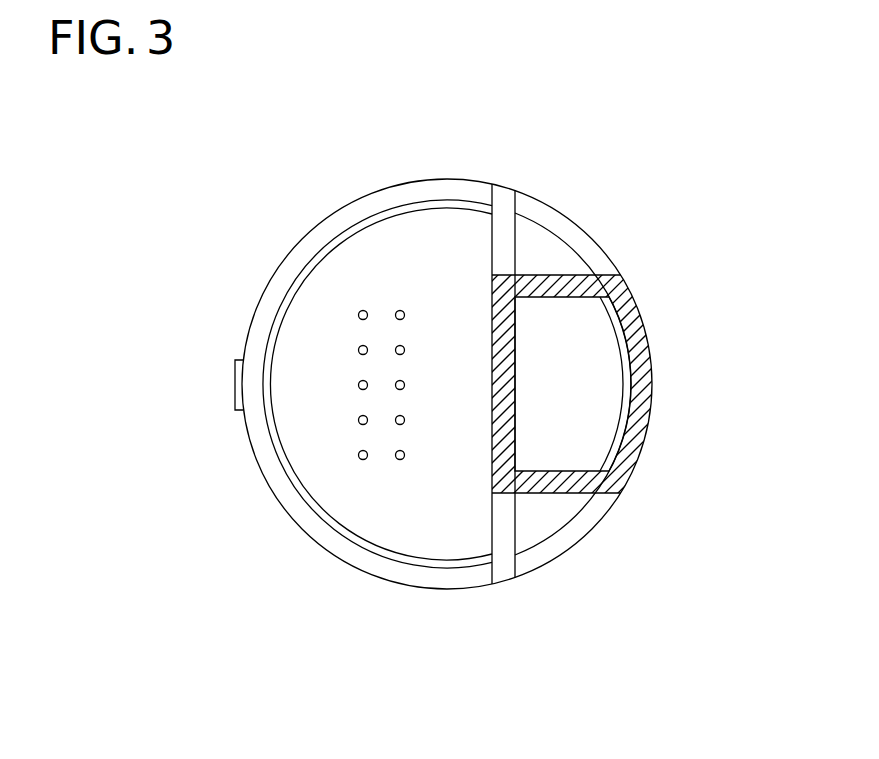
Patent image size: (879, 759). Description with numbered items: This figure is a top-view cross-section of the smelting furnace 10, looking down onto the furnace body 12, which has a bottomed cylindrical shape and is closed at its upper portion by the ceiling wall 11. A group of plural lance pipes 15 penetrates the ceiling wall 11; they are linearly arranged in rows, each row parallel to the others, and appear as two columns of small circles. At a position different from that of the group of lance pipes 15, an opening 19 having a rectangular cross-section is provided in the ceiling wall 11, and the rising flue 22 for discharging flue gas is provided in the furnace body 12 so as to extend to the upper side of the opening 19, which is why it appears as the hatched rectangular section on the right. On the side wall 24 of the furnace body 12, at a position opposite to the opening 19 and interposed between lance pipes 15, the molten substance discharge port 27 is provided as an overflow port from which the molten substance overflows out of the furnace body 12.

The smelting furnace 10 is at (652, 172).
The ceiling wall 11 is at (446, 230).
The furnace body 12 is at (370, 194).
The lance pipes 15 is at (358, 349).
The opening 19 is at (580, 347).
The rising flue 22 is at (580, 438).
The side wall 24 is at (563, 220).
The molten substance discharge port 27 is at (235, 388).